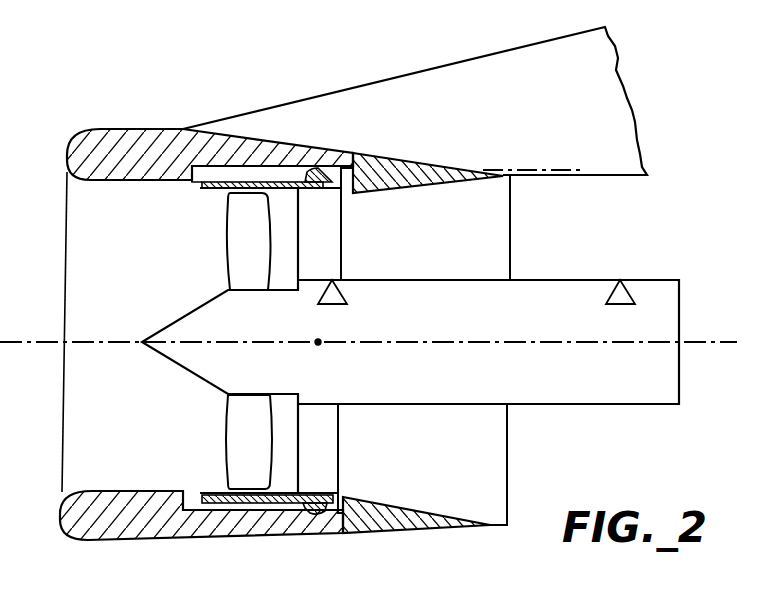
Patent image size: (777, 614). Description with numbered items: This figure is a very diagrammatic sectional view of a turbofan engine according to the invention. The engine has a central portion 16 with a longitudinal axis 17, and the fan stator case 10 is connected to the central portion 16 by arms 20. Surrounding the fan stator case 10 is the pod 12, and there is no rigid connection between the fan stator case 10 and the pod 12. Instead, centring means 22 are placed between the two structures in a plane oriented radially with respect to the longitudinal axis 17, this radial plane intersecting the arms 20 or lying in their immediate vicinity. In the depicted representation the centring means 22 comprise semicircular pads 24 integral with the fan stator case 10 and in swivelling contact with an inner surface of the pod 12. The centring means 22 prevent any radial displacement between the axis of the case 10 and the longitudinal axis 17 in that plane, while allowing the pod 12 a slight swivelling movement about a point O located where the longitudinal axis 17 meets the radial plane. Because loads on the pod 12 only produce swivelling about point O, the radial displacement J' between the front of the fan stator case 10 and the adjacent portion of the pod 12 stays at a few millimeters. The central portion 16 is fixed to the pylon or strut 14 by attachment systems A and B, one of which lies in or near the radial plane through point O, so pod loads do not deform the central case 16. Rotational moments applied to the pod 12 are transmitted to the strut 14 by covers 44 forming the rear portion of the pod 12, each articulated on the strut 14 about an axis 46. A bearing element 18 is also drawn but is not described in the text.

The fan stator case 10 is at (228, 189).
The pod 12 is at (88, 122).
The pylon or strut 14 is at (612, 97).
The central portion 16 is at (665, 396).
The longitudinal axis 17 is at (686, 341).
The bearing 18 is at (248, 448).
The arms 20 is at (328, 460).
The centring means 22 is at (318, 168).
The semicircular pads 24 is at (318, 512).
The covers 44 is at (408, 523).
The axis 46 is at (535, 169).
The radial displacement J' is at (169, 192).
The attachment system A is at (333, 294).
The attachment system B is at (621, 294).
The point O is at (320, 341).